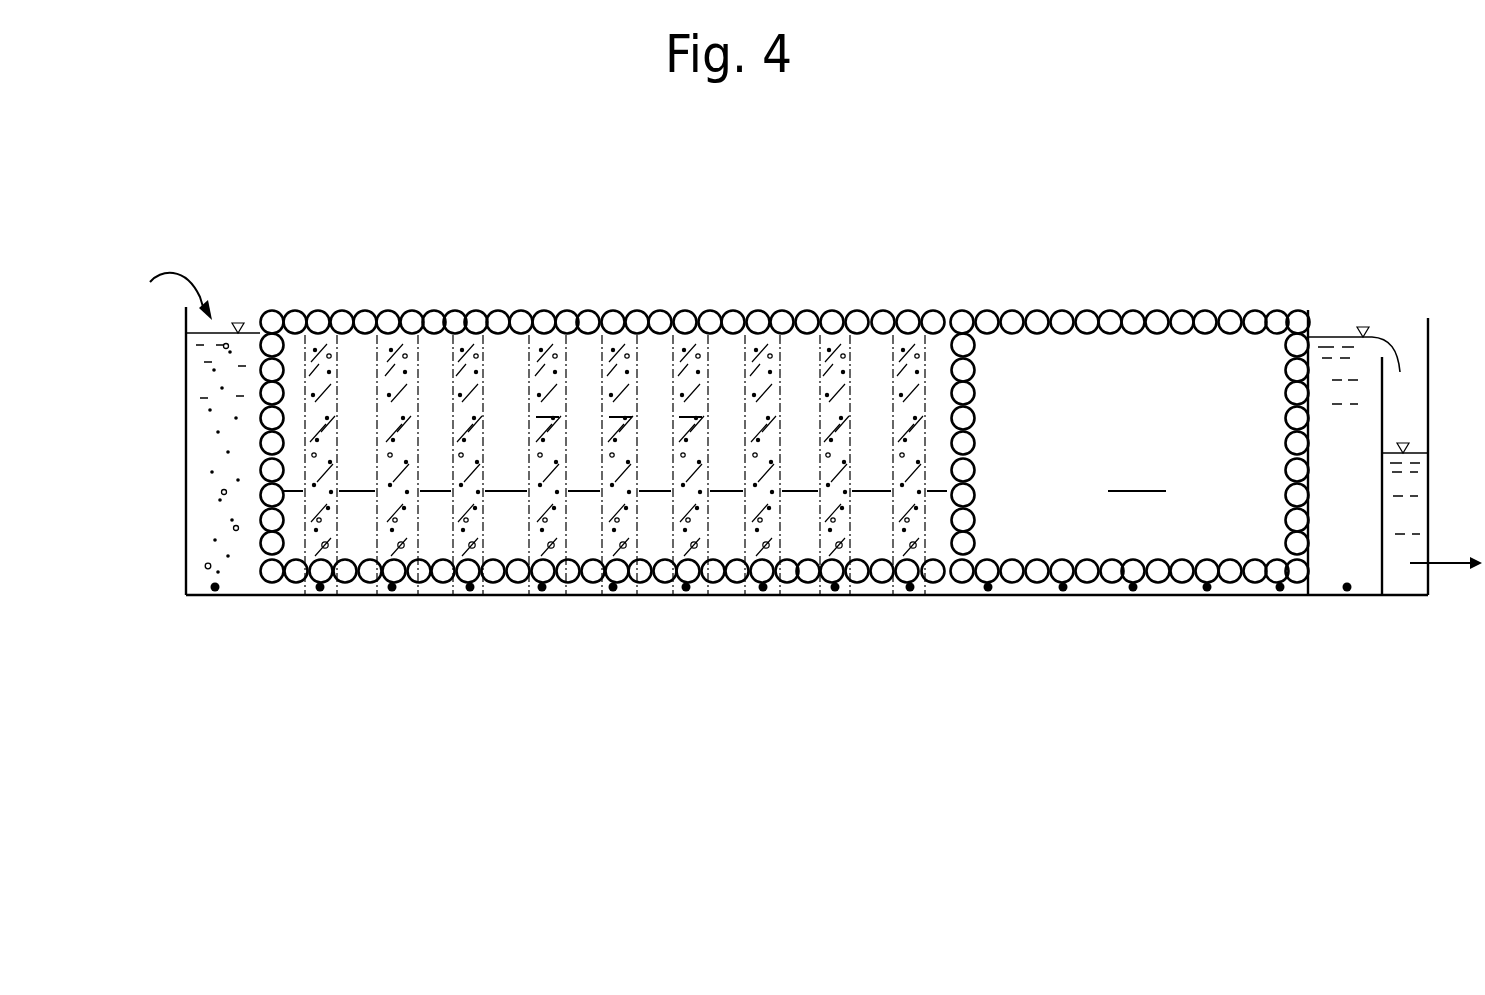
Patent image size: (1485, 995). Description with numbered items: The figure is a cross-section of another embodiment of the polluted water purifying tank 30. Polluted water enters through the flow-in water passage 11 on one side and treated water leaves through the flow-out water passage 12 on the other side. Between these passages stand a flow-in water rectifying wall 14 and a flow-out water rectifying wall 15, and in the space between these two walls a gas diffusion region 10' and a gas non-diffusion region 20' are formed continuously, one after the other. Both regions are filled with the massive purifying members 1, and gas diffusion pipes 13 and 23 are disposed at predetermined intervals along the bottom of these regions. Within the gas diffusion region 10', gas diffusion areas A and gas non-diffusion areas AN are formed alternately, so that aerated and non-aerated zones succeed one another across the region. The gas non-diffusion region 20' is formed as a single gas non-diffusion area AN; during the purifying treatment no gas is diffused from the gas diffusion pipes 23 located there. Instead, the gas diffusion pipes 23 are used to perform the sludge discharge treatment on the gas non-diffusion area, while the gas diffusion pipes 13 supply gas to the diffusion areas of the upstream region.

The massive purifying members 1 is at (588, 318).
The gas diffusion region 10' is at (614, 401).
The gas non-diffusion region 20' is at (1067, 383).
The purifying tank 30 is at (1246, 264).
The flow-in water passage 11 is at (240, 597).
The flow-out water passage 12 is at (1405, 580).
The gas diffusion pipes 13 is at (617, 615).
The flow-in water rectifying wall 14 is at (258, 316).
The flow-out water rectifying wall 15 is at (1310, 312).
The gas diffusion pipes 23 is at (1135, 600).
The gas diffusion areas A is at (470, 350).
The gas non-diffusion areas AN is at (614, 478).